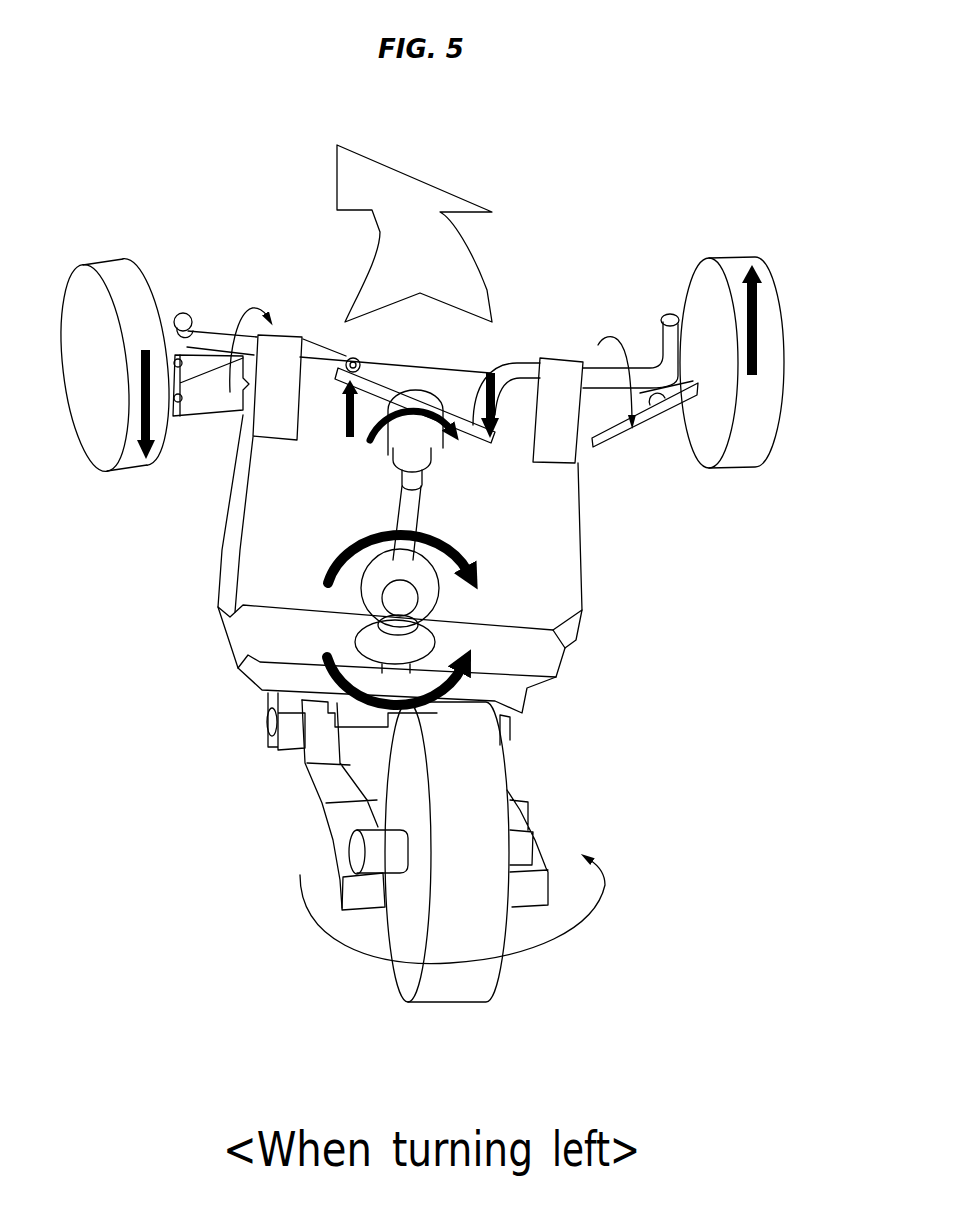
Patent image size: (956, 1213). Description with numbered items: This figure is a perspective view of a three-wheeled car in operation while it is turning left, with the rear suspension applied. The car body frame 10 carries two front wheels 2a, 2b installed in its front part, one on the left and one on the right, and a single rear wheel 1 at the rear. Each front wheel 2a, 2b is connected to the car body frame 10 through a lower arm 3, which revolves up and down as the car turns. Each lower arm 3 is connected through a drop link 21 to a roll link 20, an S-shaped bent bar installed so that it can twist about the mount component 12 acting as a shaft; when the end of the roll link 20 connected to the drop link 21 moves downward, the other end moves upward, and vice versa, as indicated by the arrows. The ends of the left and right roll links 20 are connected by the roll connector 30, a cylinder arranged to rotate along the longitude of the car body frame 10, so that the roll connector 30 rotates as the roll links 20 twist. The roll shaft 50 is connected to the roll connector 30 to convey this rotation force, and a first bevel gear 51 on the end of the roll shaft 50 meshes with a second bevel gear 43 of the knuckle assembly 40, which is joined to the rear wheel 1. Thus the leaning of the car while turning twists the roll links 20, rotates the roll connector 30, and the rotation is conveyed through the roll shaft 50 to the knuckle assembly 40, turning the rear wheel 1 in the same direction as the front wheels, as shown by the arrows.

The rear wheel 1 is at (487, 815).
The front wheel 2a is at (123, 278).
The front wheel 2b is at (733, 273).
The lower arm 3 is at (602, 430).
The car body frame 10 is at (567, 562).
The mount component 12 is at (560, 435).
The roll link 20 is at (208, 345).
The drop link 21 is at (213, 414).
The roll connector 30 is at (443, 460).
The knuckle assembly 40 is at (257, 840).
The second bevel gear 43 is at (420, 636).
The roll shaft 50 is at (410, 515).
The first bevel gear 51 is at (377, 582).